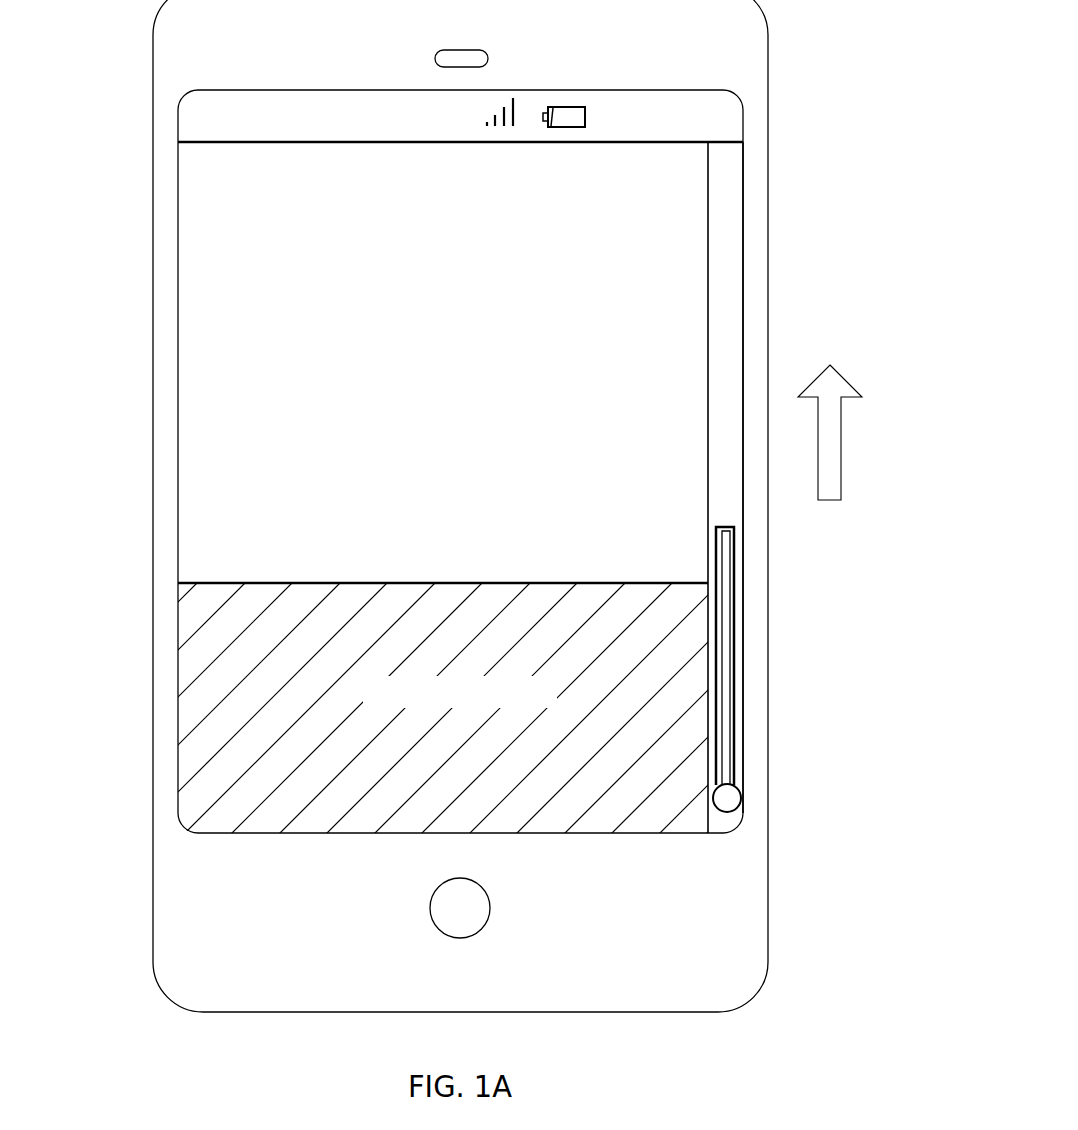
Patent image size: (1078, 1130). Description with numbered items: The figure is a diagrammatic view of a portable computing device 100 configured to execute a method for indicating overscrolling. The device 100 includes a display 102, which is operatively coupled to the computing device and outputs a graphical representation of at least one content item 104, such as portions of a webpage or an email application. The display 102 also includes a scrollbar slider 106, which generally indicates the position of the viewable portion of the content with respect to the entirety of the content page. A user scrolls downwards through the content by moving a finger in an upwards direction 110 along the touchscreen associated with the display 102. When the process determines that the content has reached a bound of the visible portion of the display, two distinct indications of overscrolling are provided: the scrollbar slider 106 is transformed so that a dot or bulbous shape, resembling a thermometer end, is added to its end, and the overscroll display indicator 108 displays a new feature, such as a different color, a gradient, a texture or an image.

The device 100 is at (478, 506).
The display 102 is at (136, 459).
The content item 104 is at (180, 316).
The scrollbar slider 106 is at (740, 712).
The overscroll display indicator 108 is at (552, 826).
The upwards direction 110 is at (850, 437).